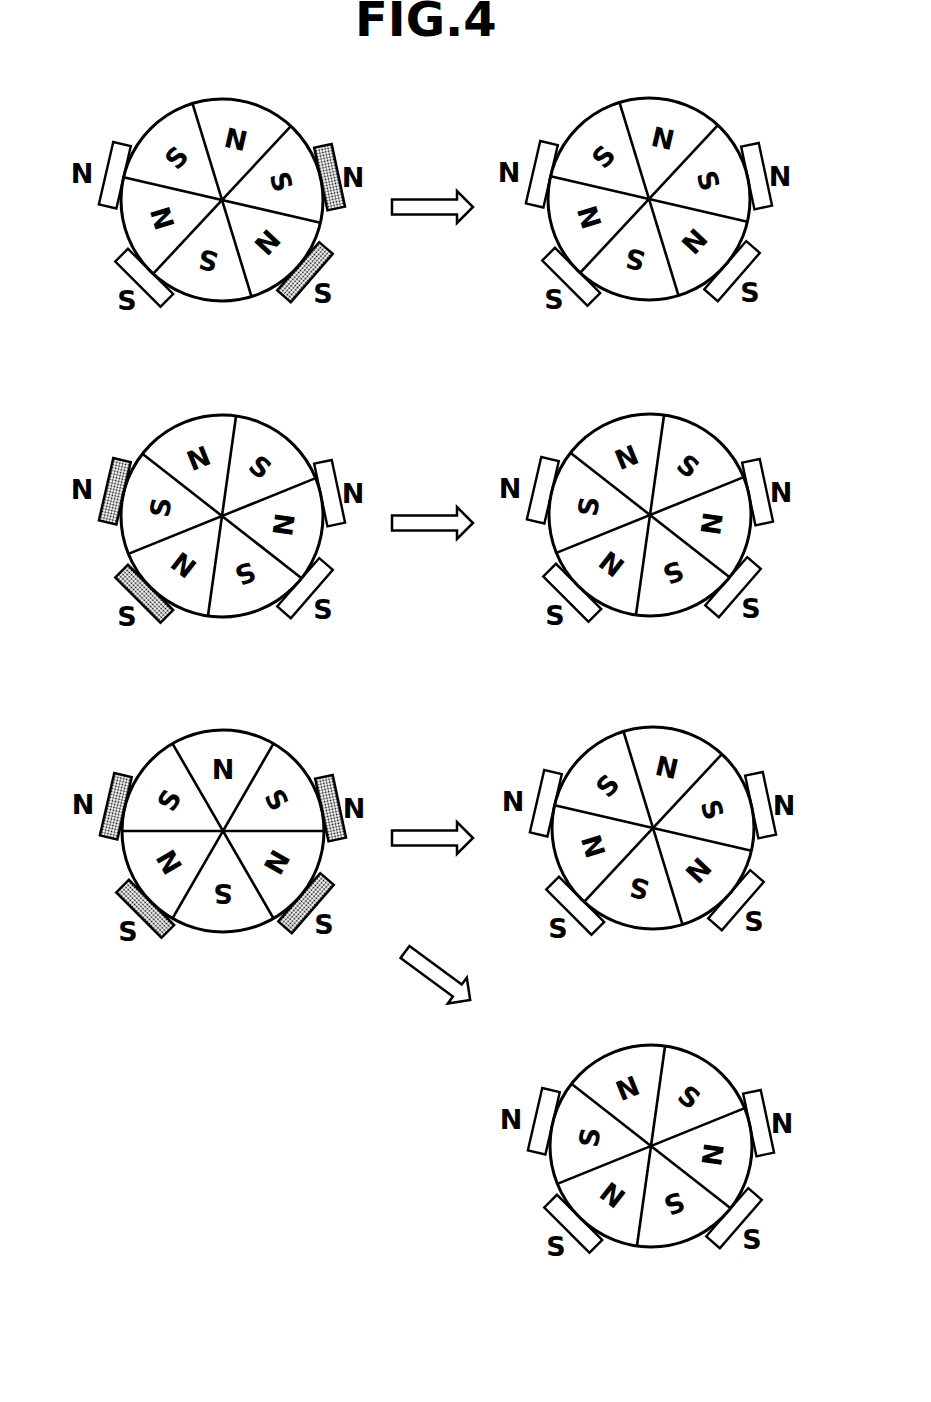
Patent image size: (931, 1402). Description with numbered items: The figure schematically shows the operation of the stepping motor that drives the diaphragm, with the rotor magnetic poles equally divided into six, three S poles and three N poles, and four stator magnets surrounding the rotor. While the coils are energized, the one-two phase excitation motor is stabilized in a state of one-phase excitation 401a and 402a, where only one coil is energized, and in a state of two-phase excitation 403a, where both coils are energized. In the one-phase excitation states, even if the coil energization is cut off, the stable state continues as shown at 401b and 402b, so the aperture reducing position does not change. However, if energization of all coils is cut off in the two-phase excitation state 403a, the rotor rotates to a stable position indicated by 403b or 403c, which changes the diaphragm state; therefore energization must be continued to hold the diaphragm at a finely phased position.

The state of 1-phase excitation 401a is at (218, 243).
The stable state after cutting off energization from 1-phase excitation 401b is at (645, 242).
The state of 1-phase excitation 402a is at (218, 559).
The stable state after cutting off energization from 1-phase excitation 402b is at (646, 558).
The state of 2-phase excitation 403a is at (219, 874).
The stable position after cutting off 2-phase excitation 403b is at (649, 871).
The stable position after cutting off 2-phase excitation 403c is at (647, 1191).